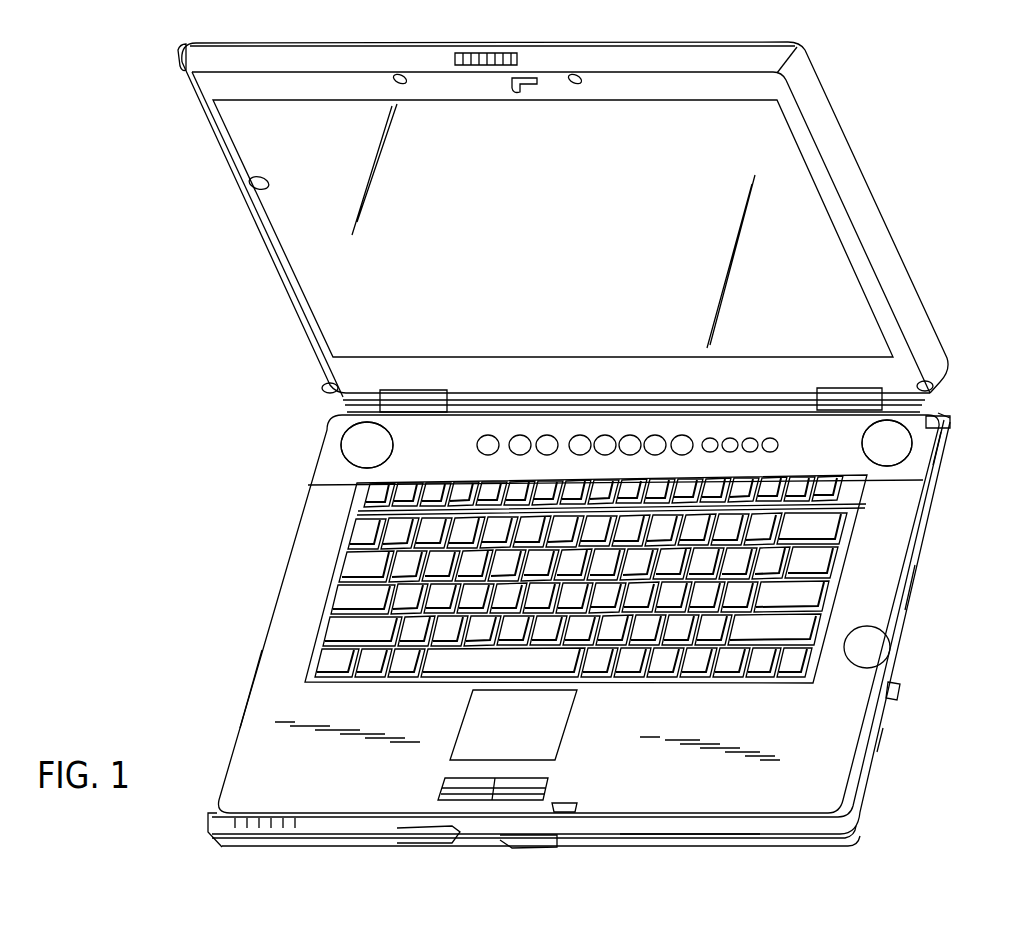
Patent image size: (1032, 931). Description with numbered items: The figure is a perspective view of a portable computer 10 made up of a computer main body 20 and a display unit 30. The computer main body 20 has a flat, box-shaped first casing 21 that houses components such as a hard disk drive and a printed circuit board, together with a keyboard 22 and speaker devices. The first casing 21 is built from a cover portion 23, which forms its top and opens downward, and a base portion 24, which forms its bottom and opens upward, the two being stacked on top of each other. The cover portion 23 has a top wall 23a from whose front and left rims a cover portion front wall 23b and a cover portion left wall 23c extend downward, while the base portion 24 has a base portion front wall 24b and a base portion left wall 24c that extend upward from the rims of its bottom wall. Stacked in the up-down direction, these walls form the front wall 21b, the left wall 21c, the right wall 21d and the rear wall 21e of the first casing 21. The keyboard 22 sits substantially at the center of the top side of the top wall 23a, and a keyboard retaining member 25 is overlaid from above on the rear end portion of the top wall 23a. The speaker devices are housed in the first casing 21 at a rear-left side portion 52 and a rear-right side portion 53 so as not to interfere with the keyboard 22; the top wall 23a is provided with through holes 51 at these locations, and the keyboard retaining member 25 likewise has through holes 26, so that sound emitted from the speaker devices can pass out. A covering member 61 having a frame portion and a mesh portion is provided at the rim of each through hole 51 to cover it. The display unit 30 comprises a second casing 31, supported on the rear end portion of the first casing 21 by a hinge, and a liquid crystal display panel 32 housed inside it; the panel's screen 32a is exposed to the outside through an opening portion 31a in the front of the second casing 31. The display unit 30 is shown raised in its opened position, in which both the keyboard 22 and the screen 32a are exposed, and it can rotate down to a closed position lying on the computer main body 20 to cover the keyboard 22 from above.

The portable computer 10 is at (681, 41).
The computer main body 20 is at (295, 530).
The first casing 21 is at (255, 703).
The front wall 21b is at (393, 826).
The left wall 21c is at (892, 692).
The right wall 21d is at (270, 610).
The rear wall 21e is at (936, 413).
The keyboard 22 is at (338, 580).
The cover portion 23 is at (238, 762).
The top wall 23a is at (813, 767).
The cover portion front wall 23b is at (668, 822).
The cover portion left wall 23c is at (898, 592).
The base portion 24 is at (841, 840).
The base portion front wall 24b is at (603, 832).
The base portion left wall 24c is at (878, 740).
The keyboard retaining member 25 is at (930, 424).
The through holes 26 is at (330, 442).
The display unit 30 is at (291, 316).
The second casing 31 is at (268, 244).
The opening portion 31a is at (262, 183).
The liquid crystal display panel 32 is at (790, 178).
The screen 32a is at (499, 232).
The through holes 51 is at (373, 400).
The rear-left side portion 52 is at (925, 447).
The rear-right side portion 53 is at (328, 468).
The covering member 61 is at (386, 443).